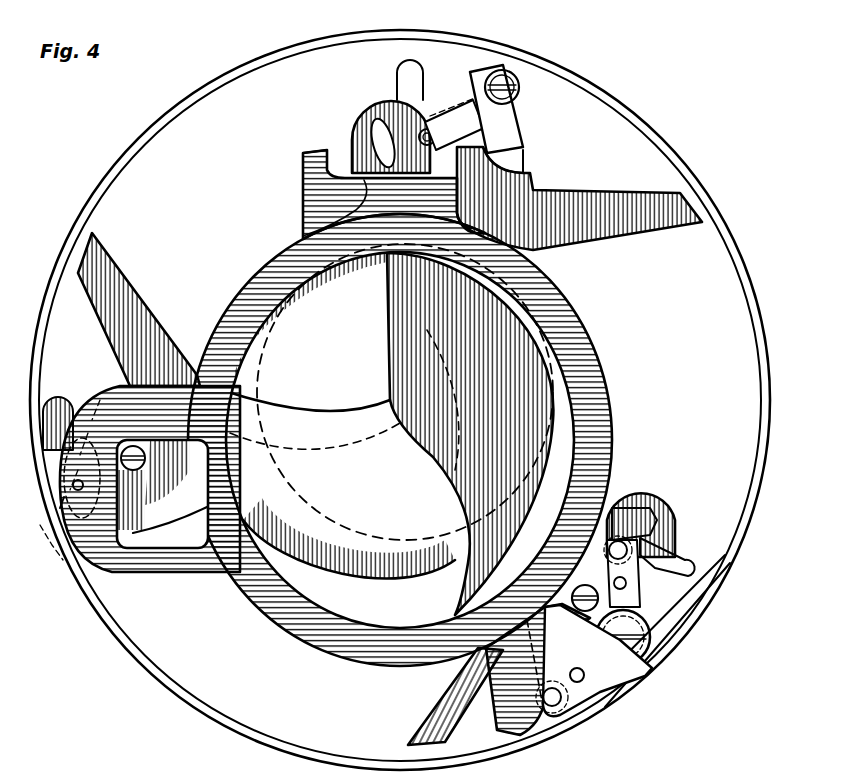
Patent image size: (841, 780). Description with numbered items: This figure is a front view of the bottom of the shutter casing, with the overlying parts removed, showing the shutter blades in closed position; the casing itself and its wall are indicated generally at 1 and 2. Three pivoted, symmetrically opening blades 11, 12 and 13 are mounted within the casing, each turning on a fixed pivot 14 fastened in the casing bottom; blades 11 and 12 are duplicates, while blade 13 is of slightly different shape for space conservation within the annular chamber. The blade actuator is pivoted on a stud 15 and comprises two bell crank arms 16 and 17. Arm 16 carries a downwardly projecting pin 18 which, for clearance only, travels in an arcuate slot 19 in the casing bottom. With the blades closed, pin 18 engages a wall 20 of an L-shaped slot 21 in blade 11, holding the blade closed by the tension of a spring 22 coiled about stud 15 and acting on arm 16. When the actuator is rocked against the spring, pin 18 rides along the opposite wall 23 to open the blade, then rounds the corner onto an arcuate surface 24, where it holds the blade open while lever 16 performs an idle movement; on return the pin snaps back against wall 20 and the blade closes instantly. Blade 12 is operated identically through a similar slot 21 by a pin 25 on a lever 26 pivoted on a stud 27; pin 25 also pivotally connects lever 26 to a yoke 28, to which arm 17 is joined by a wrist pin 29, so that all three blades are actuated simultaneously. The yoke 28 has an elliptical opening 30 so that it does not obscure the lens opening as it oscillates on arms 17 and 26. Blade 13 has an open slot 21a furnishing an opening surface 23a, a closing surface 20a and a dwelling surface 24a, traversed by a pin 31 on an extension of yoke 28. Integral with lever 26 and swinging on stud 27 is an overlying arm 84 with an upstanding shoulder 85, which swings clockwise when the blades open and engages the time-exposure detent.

The casing 1 is at (400, 400).
The casing wall 2 is at (104, 183).
The shutter blade 11 is at (432, 450).
The shutter blade 12 is at (292, 372).
The shutter blade 13 is at (300, 495).
The fixed pivot 14 is at (512, 170).
The stud 15 is at (652, 672).
The bell crank arm 16 is at (634, 590).
The bell crank arm 17 is at (566, 702).
The pin 18 is at (634, 548).
The arcuate slot 19 is at (710, 575).
The wall 20 is at (636, 512).
The blade closing surface 20a is at (62, 555).
The L-shaped slot 21 is at (372, 146).
The open slot 21a is at (77, 434).
The spring 22 is at (648, 635).
The wall 23 is at (402, 106).
The blade opening surface 23a is at (70, 488).
The arcuate surface 24 is at (378, 126).
The dwelling surface 24a is at (64, 468).
The pin 25 is at (420, 150).
The lever 26 is at (425, 122).
The stud 27 is at (520, 92).
The yoke 28 is at (612, 395).
The wrist pin 29 is at (552, 708).
The elliptical opening 30 is at (368, 628).
The pin 31 is at (62, 500).
The overlying arm 84 is at (522, 124).
The upstanding shoulder 85 is at (518, 150).